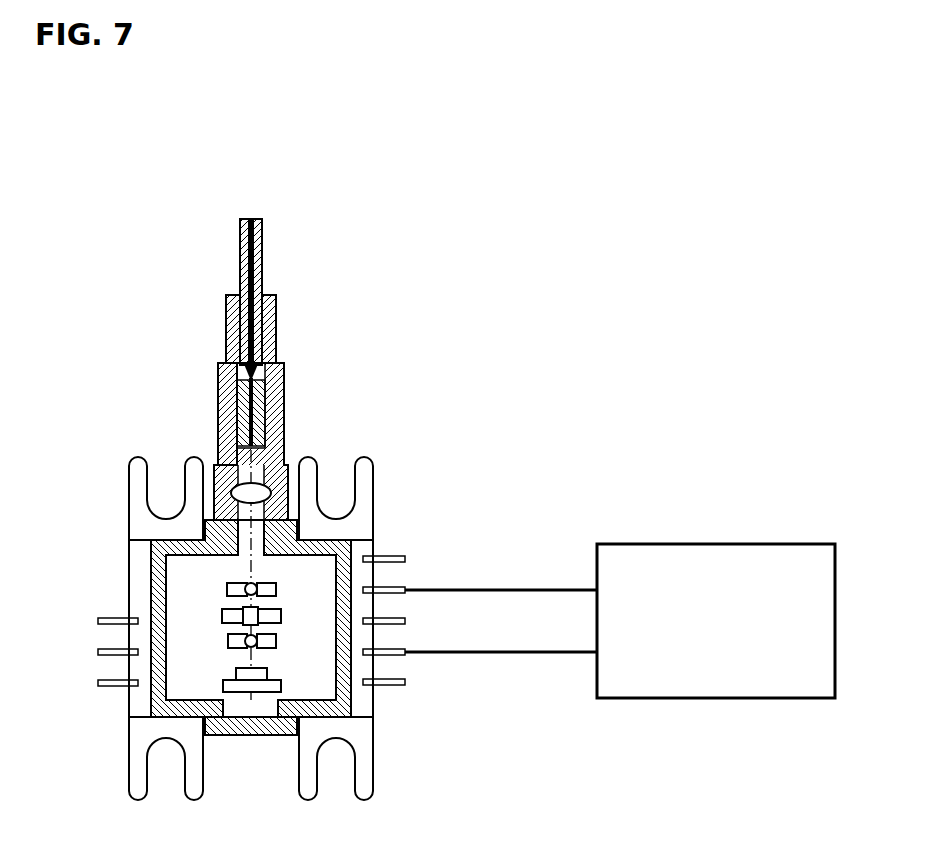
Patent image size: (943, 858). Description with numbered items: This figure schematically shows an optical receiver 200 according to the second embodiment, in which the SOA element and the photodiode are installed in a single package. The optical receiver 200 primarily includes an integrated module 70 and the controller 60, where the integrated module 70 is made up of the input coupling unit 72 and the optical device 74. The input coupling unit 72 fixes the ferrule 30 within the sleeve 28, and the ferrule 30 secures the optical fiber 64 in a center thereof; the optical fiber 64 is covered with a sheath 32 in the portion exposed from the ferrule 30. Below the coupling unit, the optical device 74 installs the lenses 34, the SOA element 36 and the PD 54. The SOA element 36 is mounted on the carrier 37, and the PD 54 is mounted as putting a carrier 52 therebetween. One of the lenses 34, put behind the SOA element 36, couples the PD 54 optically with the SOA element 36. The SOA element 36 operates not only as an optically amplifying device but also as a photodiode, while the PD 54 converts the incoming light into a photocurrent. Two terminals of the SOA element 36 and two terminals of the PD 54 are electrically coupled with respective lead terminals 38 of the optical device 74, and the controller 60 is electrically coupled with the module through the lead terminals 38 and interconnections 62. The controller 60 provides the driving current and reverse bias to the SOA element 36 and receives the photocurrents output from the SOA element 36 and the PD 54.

The optical receiver 200 is at (688, 292).
The integrated module 70 is at (420, 361).
The input coupling unit 72 is at (175, 340).
The optical device 74 is at (87, 509).
The sheath 32 is at (263, 258).
The sleeve 28 is at (285, 378).
The ferrule 30 is at (263, 413).
The optical fiber 64 is at (218, 393).
The lenses 34 is at (236, 489).
The SOA element 36 is at (222, 612).
The carrier 37 is at (157, 628).
The lead terminals 38 is at (405, 661).
The carrier 52 is at (261, 692).
The PD 54 is at (247, 673).
The controller 60 is at (722, 544).
The interconnections 62 is at (494, 590).